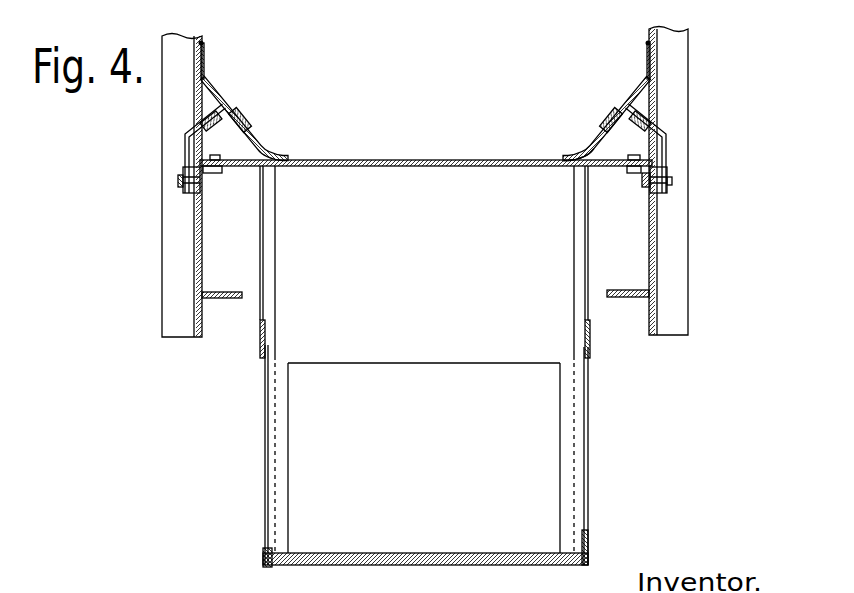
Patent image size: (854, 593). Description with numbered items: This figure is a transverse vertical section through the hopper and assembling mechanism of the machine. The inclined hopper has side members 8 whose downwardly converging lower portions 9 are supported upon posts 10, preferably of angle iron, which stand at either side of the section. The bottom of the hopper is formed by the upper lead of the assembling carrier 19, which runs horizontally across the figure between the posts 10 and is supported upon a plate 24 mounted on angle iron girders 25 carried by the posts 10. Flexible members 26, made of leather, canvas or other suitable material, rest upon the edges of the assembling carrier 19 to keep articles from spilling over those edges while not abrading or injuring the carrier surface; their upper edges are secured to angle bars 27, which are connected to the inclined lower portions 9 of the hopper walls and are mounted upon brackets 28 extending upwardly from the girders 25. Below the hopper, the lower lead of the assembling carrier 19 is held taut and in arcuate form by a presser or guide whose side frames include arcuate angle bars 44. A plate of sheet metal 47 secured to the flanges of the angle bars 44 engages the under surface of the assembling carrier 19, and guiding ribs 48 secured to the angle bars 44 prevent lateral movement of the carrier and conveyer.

The side member 8 is at (648, 62).
The downwardly converging lower portion 9 is at (625, 110).
The post 10 is at (164, 125).
The assembling carrier 19 is at (453, 160).
The plate 24 is at (241, 168).
The angle iron girder 25 is at (655, 170).
The flexible member 26 is at (590, 148).
The angle bar 27 is at (632, 108).
The bracket 28 is at (665, 137).
The arcuate angle bar 44 is at (265, 542).
The plate of sheet metal 47 is at (382, 553).
The guiding rib 48 is at (268, 567).